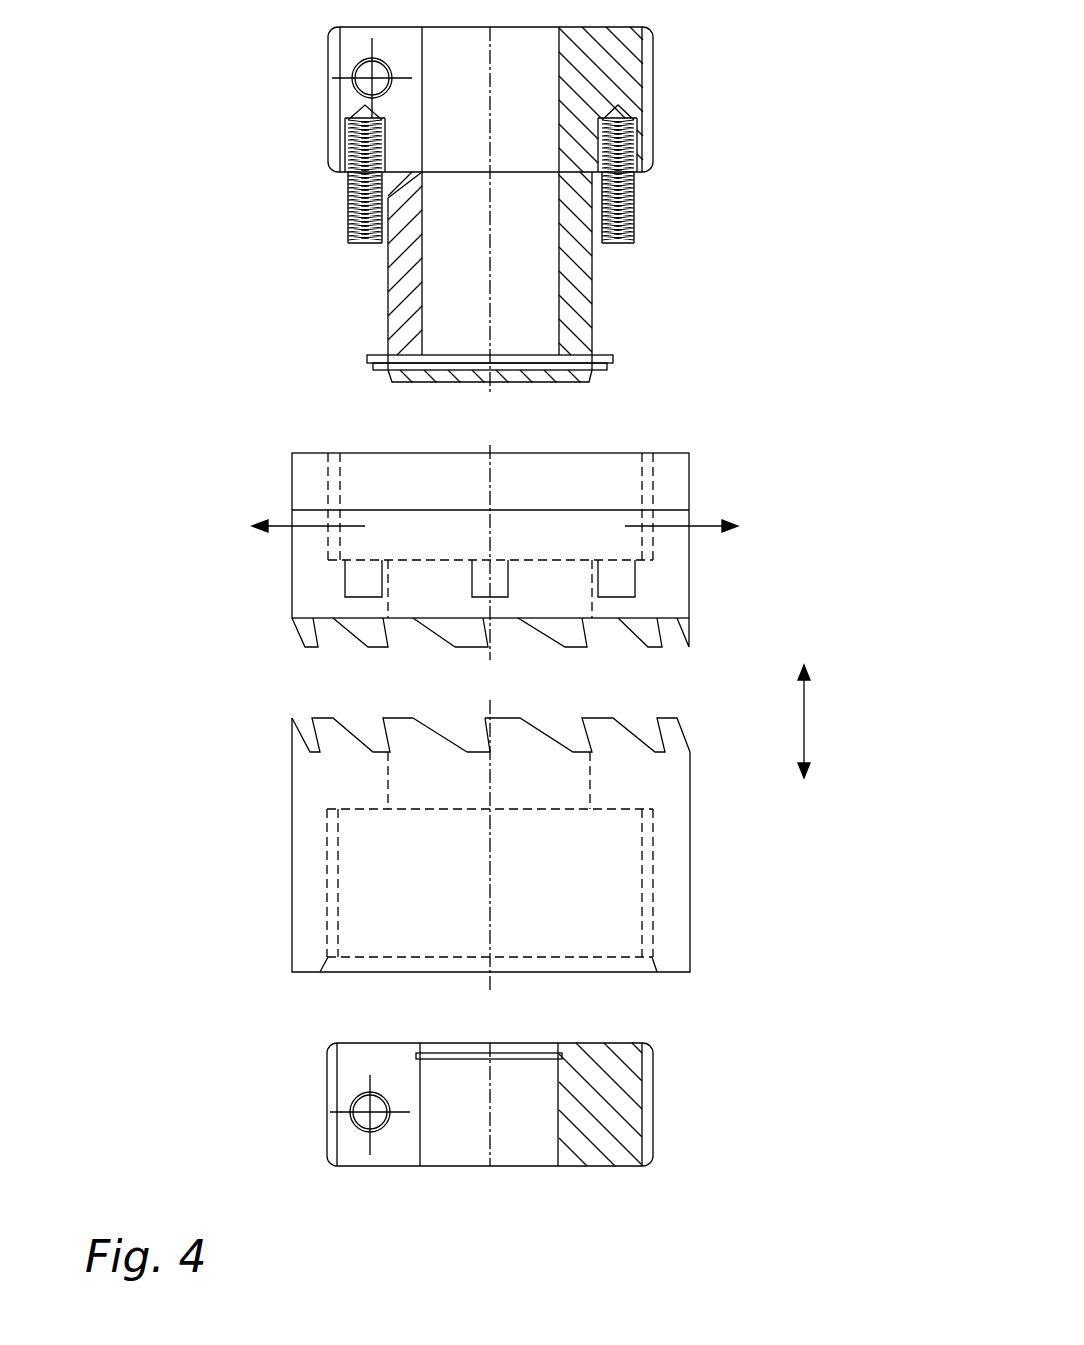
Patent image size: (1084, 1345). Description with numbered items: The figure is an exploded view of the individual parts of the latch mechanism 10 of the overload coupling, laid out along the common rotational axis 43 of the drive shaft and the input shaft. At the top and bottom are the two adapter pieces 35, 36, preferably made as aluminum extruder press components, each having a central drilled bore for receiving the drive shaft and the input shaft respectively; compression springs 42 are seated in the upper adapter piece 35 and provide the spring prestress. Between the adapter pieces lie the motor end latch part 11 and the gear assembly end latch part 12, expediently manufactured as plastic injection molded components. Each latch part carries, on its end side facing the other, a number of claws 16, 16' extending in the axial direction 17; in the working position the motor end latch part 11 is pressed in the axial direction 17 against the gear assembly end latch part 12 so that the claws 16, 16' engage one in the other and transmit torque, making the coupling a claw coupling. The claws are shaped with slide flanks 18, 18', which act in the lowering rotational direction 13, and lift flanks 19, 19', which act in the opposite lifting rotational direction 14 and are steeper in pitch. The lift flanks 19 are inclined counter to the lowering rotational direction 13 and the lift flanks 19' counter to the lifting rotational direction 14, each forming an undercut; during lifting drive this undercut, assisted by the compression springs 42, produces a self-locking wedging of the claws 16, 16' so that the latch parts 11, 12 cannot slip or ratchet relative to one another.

The latch mechanism 10 is at (748, 282).
The motor end latch part 11 is at (676, 580).
The gear assembly end latch part 12 is at (678, 920).
The lowering rotational direction 13 is at (275, 526).
The lifting rotational direction 14 is at (705, 526).
The claws 16 is at (490, 632).
The claws 16' is at (491, 736).
The axial direction 17 is at (804, 729).
The slide flanks 18 is at (418, 648).
The slide flanks 18' is at (463, 719).
The lift flanks 19 is at (509, 646).
The lift flanks 19' is at (400, 719).
The adapter piece 35 is at (623, 86).
The adapter piece 36 is at (637, 1120).
The compression springs 42 is at (350, 210).
The rotational axis 43 is at (489, 861).